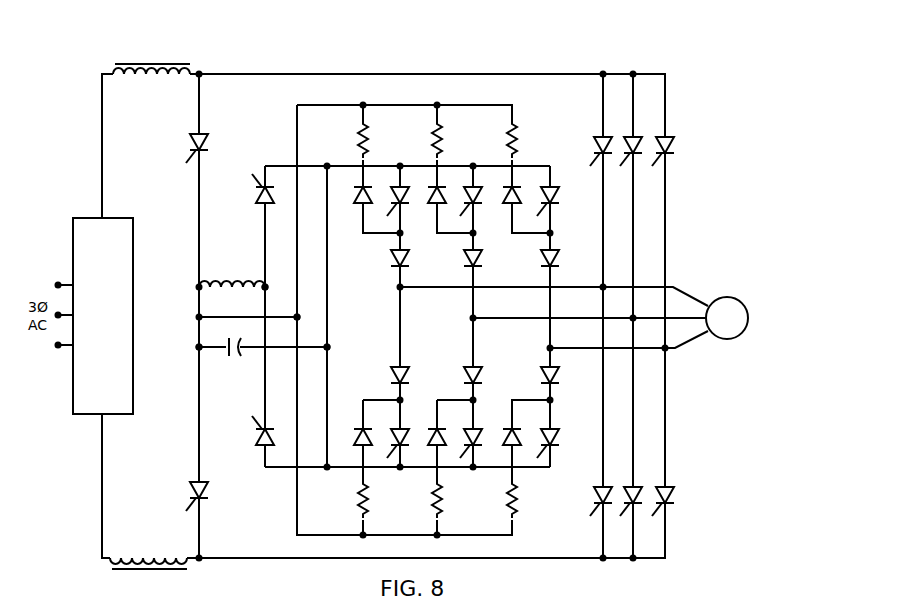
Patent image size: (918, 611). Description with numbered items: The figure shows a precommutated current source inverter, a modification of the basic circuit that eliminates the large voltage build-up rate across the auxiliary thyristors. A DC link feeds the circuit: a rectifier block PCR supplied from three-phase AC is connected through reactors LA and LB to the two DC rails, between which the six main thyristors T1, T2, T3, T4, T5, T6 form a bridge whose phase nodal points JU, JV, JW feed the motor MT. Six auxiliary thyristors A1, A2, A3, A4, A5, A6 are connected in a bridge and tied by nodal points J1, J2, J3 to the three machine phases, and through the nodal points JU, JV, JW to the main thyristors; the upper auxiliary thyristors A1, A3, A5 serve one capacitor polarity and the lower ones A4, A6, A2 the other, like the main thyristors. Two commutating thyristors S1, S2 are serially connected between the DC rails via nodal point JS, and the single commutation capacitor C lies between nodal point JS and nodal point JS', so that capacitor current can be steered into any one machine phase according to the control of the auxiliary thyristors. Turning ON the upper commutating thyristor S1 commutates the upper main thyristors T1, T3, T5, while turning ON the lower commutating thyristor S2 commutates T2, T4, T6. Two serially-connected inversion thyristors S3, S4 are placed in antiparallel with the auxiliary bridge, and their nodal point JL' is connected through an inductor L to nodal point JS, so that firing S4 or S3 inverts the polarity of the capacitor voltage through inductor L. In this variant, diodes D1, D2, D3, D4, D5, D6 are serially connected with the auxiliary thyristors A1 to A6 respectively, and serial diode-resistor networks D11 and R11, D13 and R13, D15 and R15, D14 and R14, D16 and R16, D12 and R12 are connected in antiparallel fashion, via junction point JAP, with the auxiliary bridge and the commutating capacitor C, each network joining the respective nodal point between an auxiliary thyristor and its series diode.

The AC-side reactor LA is at (148, 60).
The AC-side reactor LB is at (146, 552).
The phase controlled rectifier PCR is at (103, 316).
The commutating thyristor S1 is at (209, 143).
The commutating thyristor S2 is at (189, 490).
The inversion thyristor S3 is at (254, 438).
The inversion thyristor S4 is at (254, 195).
The inductor L is at (236, 278).
The nodal point JL' is at (274, 293).
The junction point JAP is at (297, 314).
The nodal point JS is at (183, 348).
The nodal point JS' is at (337, 340).
The commutation capacitor C is at (232, 366).
The resistor R11 is at (356, 140).
The resistor R13 is at (430, 140).
The resistor R15 is at (506, 140).
The resistor R14 is at (357, 497).
The resistor R16 is at (431, 497).
The resistor R12 is at (506, 497).
The diode D11 is at (358, 197).
The diode D13 is at (430, 201).
The diode D15 is at (505, 201).
The diode D14 is at (352, 430).
The diode D16 is at (426, 430).
The diode D12 is at (500, 430).
The diode D1 is at (391, 258).
The diode D2 is at (541, 373).
The diode D3 is at (463, 258).
The diode D4 is at (391, 369).
The diode D5 is at (540, 258).
The diode D6 is at (464, 369).
The auxiliary thyristor A1 is at (392, 196).
The auxiliary thyristor A2 is at (557, 440).
The auxiliary thyristor A3 is at (482, 197).
The auxiliary thyristor A4 is at (406, 441).
The auxiliary thyristor A5 is at (558, 196).
The auxiliary thyristor A6 is at (479, 441).
The nodal point J1 is at (399, 288).
The nodal point J2 is at (472, 318).
The nodal point J3 is at (549, 348).
The main thyristor T1 is at (592, 140).
The main thyristor T2 is at (676, 493).
The main thyristor T3 is at (627, 140).
The main thyristor T4 is at (592, 493).
The main thyristor T5 is at (676, 142).
The main thyristor T6 is at (626, 490).
The nodal point JU is at (602, 286).
The nodal point JV is at (632, 317).
The nodal point JW is at (666, 349).
The motor MT is at (727, 318).